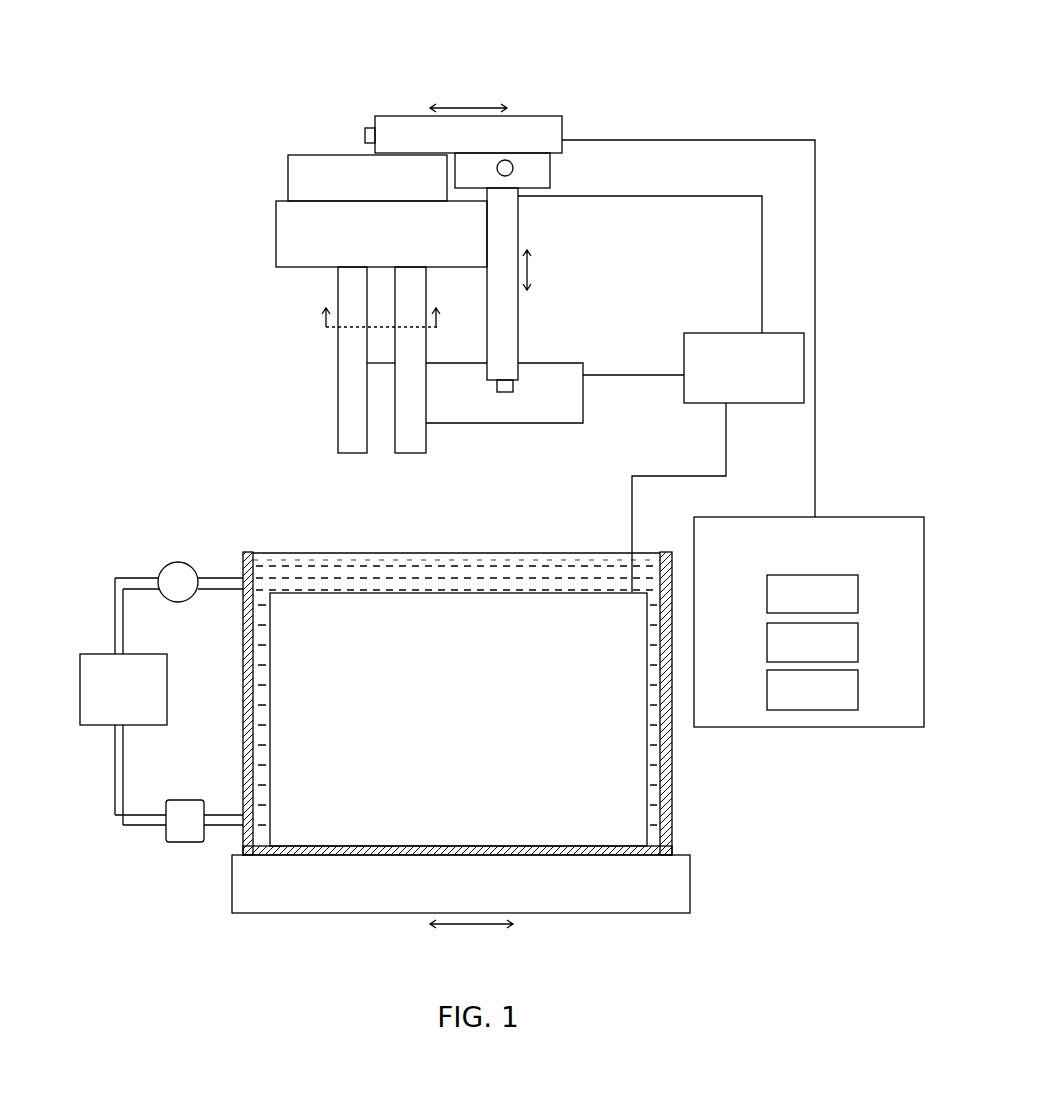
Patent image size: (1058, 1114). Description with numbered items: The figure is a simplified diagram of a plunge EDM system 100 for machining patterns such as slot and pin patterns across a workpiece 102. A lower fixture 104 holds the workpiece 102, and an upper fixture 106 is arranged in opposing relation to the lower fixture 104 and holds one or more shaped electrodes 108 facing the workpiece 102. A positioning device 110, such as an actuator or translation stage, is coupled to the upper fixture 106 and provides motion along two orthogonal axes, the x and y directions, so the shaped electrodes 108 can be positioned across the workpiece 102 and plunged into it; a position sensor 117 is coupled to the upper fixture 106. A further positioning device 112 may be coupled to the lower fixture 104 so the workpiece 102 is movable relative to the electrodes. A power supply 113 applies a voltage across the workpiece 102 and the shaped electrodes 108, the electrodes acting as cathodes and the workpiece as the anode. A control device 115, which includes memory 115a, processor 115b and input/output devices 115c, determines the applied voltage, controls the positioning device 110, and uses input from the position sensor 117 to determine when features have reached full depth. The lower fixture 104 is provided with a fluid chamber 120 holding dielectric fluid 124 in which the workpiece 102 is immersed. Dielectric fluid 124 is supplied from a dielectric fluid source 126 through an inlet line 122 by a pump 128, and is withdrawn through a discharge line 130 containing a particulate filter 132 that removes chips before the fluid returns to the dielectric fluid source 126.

The plunge EDM system 100 is at (468, 66).
The workpiece 102 is at (301, 581).
The lower fixture 104 is at (672, 800).
The upper fixture 106 is at (276, 234).
The shaped electrodes 108 is at (337, 436).
The positioning device 110 is at (545, 115).
The positioning device 112 is at (690, 889).
The power supply 113 is at (698, 332).
The control device 115 is at (878, 515).
The memory 115a is at (812, 594).
The processor 115b is at (812, 642).
The input/output devices 115c is at (812, 690).
The position sensor 117 is at (287, 170).
The fluid chamber 120 is at (670, 767).
The inlet line 122 is at (220, 578).
The dielectric fluid 124 is at (560, 568).
The dielectric fluid source 126 is at (123, 701).
The pump 128 is at (176, 560).
The discharge line 130 is at (222, 830).
The particulate filter 132 is at (175, 845).